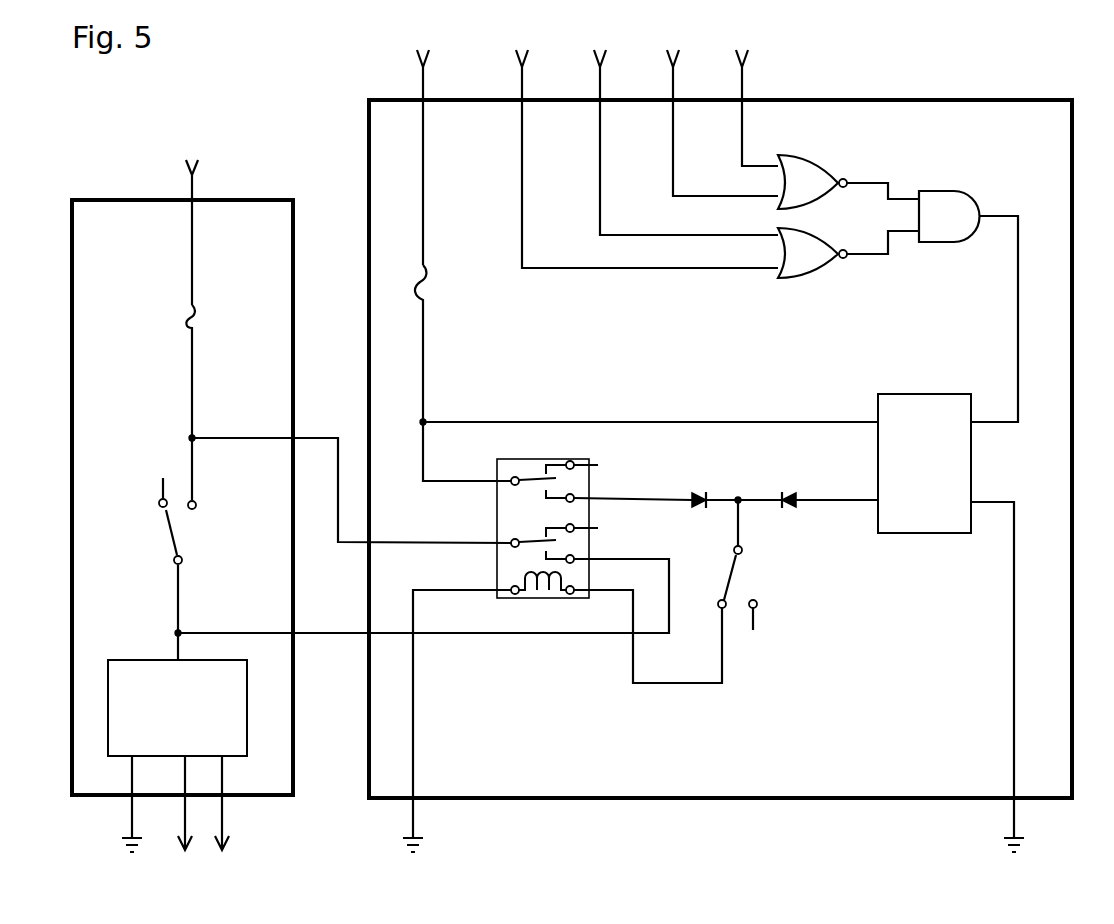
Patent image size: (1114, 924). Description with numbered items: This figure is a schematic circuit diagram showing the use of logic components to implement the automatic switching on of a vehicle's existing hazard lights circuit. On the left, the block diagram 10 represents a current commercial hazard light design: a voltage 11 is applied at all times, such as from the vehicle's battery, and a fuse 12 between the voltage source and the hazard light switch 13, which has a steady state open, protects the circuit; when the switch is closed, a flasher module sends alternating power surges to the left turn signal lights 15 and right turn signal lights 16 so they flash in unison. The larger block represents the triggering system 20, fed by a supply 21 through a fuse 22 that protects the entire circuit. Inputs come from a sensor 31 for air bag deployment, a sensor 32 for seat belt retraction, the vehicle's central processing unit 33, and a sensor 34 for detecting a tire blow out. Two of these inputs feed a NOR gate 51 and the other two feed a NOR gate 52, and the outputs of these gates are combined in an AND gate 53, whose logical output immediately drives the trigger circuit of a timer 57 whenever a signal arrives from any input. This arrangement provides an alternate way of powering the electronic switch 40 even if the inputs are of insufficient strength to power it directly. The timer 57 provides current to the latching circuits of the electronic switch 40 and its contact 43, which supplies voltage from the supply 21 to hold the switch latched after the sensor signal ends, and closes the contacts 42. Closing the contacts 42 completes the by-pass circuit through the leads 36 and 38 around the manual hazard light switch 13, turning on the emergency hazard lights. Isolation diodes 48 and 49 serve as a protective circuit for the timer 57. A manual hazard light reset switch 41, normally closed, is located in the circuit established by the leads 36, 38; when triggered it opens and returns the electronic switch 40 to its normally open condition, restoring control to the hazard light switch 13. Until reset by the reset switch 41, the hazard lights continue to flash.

The block diagram 10 is at (72, 212).
The voltage 11 is at (192, 162).
The fuse 12 is at (192, 298).
The hazard light switch 13 is at (170, 524).
The left turn signal lights 15 is at (186, 850).
The right turn signal lights 16 is at (226, 852).
The triggering system 20 is at (1025, 100).
The supply 21 is at (450, 26).
The fuse 22 is at (424, 268).
The sensor 31 is at (548, 26).
The sensor 32 is at (626, 30).
The central processing unit 33 is at (700, 26).
The sensor 34 is at (770, 28).
The lead 36 is at (338, 438).
The lead 38 is at (322, 633).
The electronic switch 40 is at (530, 598).
The hazard light reset switch 41 is at (732, 578).
The contacts 42 is at (530, 540).
The contact 43 is at (524, 478).
The isolation diode 48 is at (696, 498).
The isolation diode 49 is at (786, 496).
The NOR gate 51 is at (818, 160).
The NOR gate 52 is at (826, 274).
The AND gate 53 is at (962, 194).
The timer 57 is at (942, 394).